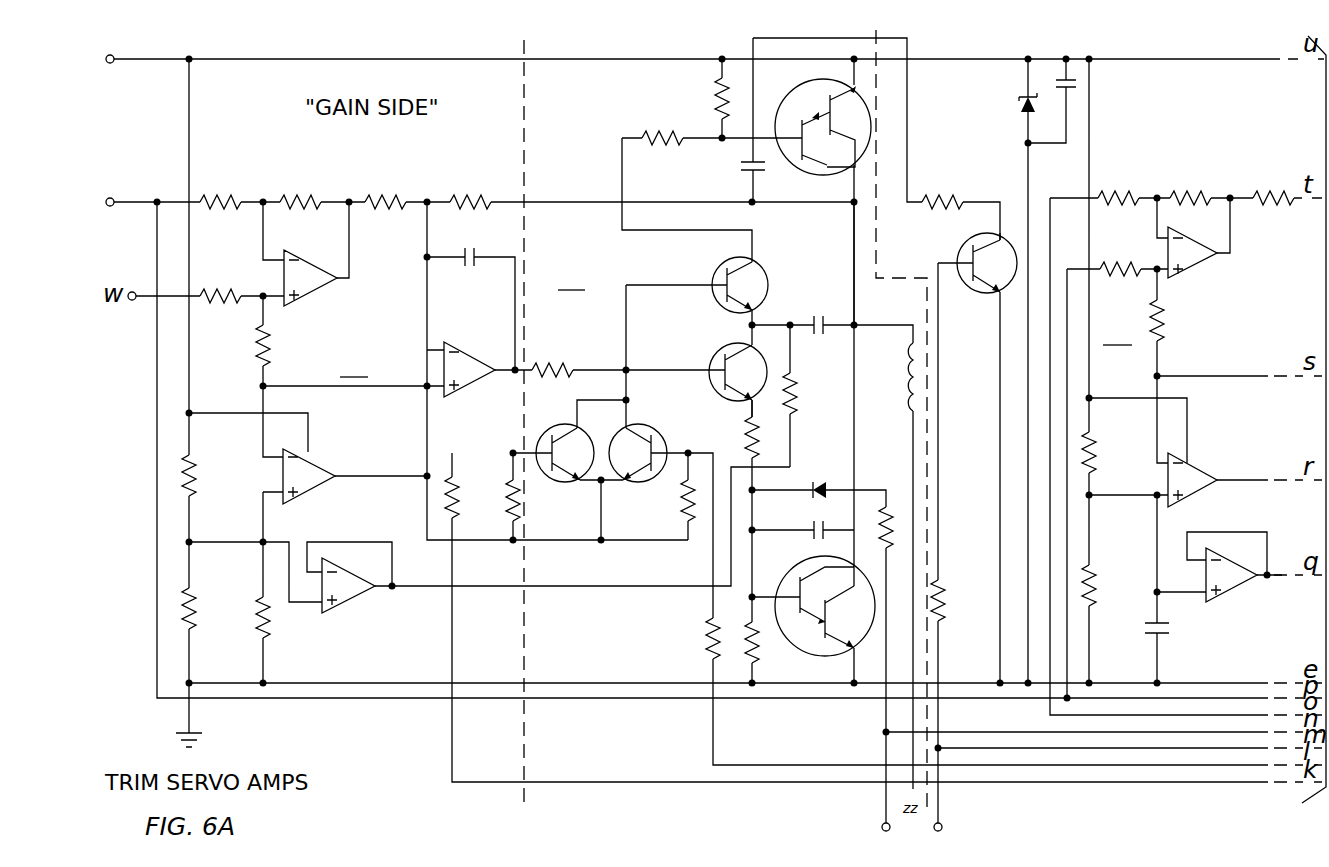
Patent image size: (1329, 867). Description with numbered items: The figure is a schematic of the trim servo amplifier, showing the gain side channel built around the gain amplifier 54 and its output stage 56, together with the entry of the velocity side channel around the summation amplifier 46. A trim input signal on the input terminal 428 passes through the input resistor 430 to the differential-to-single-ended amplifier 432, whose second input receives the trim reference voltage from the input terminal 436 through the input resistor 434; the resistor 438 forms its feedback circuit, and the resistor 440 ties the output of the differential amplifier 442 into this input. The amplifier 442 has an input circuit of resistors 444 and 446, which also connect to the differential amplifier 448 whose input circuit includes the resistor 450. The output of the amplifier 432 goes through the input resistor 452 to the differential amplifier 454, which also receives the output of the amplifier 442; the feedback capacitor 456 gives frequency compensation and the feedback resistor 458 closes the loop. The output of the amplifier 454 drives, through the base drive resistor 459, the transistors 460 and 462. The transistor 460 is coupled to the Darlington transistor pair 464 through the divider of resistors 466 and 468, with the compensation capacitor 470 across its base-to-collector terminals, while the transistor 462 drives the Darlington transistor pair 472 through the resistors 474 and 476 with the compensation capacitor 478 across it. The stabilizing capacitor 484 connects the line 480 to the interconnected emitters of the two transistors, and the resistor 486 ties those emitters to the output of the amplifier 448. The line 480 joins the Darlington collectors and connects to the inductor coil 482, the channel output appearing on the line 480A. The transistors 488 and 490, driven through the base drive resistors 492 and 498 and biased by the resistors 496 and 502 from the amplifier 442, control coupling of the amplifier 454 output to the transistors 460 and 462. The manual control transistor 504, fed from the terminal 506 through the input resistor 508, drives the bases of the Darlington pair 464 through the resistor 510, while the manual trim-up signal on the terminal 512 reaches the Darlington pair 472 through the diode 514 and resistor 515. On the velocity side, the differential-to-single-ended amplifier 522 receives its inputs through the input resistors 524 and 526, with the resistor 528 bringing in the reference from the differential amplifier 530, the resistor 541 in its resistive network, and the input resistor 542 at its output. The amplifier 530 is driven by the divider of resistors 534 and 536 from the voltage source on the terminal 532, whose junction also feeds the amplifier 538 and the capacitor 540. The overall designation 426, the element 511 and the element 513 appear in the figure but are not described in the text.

The trim servo amplifier circuit 426 is at (336, 713).
The input terminal 428 is at (131, 292).
The input resistor 430 is at (230, 292).
The differential-to-single-ended amplifier 432 is at (325, 295).
The input resistor 434 is at (240, 181).
The input terminal 436 is at (112, 198).
The resistor 438 is at (318, 176).
The resistor 440 is at (262, 330).
The differential amplifier 442 is at (312, 468).
The resistor 444 is at (196, 478).
The resistor 446 is at (220, 577).
The differential amplifier 448 is at (345, 605).
The resistor 450 is at (258, 622).
The input resistor 452 is at (400, 173).
The differential amplifier 454 is at (470, 355).
The feedback capacitor 456 is at (490, 242).
The feedback resistor 458 is at (490, 172).
The base drive resistor 459 is at (565, 368).
The transistor 460 is at (713, 275).
The transistor 462 is at (711, 360).
The Darlington transistor pair 464 is at (788, 98).
The resistor 466 is at (677, 140).
The resistor 468 is at (718, 92).
The compensation capacitor 470 is at (767, 168).
The Darlington transistor pair 472 is at (830, 650).
The resistor 474 is at (750, 432).
The resistor 476 is at (750, 655).
The compensation capacitor 478 is at (818, 539).
The line 480 is at (852, 245).
The line 480A is at (913, 470).
The inductor coil 482 is at (896, 348).
The stabilizing capacitor 484 is at (820, 336).
The resistor 486 is at (795, 400).
The transistor 488 is at (540, 442).
The transistor 490 is at (670, 412).
The base drive resistor 492 is at (448, 498).
The bias resistor 496 is at (518, 500).
The base drive resistor 498 is at (709, 640).
The bias resistor 502 is at (684, 500).
The manual control transistor 504 is at (963, 252).
The terminal 506 is at (945, 826).
The input resistor 508 is at (942, 595).
The resistor 510 is at (958, 200).
The zener diode 511 is at (1020, 100).
The terminal 512 is at (880, 827).
The capacitor 513 is at (1078, 84).
The diode 514 is at (818, 498).
The resistor 515 is at (892, 520).
The differential-to-single-ended amplifier 522 is at (1205, 268).
The input resistor 524 is at (1138, 166).
The input resistor 526 is at (1140, 232).
The resistor 528 is at (1162, 332).
The differential amplifier 530 is at (1192, 475).
The terminal 532 is at (110, 63).
The resistor 534 is at (1093, 450).
The resistor 536 is at (1093, 590).
The amplifier 538 is at (1235, 590).
The capacitor 540 is at (1143, 628).
The resistor 541 is at (1215, 166).
The input resistor 542 is at (1300, 166).
The summation amplifier 46 is at (1119, 331).
The gain amplifier 54 is at (356, 363).
The output stage 56 is at (574, 276).